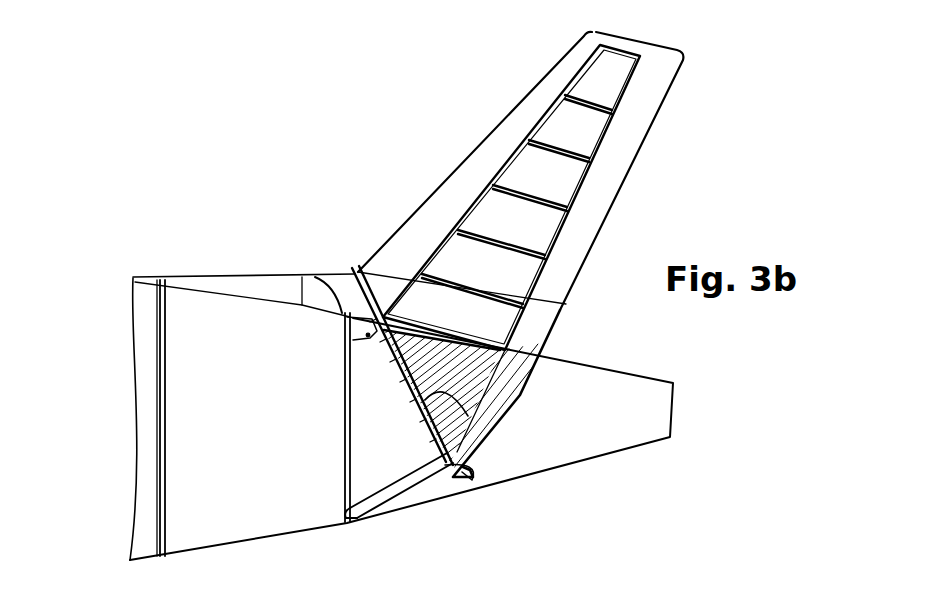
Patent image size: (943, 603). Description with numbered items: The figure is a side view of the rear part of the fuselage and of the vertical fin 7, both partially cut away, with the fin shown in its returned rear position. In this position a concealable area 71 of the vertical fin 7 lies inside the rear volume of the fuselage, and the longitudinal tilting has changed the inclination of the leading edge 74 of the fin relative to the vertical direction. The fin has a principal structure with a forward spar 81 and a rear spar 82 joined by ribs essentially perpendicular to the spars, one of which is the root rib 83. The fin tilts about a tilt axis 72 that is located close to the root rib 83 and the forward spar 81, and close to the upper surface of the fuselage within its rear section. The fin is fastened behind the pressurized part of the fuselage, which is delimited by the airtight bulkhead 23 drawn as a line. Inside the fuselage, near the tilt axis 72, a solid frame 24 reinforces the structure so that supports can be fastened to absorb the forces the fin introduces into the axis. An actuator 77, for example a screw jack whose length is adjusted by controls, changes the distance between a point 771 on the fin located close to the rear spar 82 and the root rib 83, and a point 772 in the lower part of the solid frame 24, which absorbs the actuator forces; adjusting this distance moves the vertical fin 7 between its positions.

The vertical fin 7 is at (697, 86).
The leading edge 74 is at (471, 153).
The forward spar 81 is at (560, 97).
The rear spar 82 is at (600, 137).
The tilt axis 72 is at (356, 310).
The root rib 83 is at (478, 405).
The concealable area 71 is at (505, 400).
The airtight bulkhead 23 is at (157, 420).
The solid frame 24 is at (348, 414).
The actuator 77 is at (388, 487).
The point on the vertical fin 771 is at (440, 490).
The point on the fuselage structure 772 is at (370, 513).